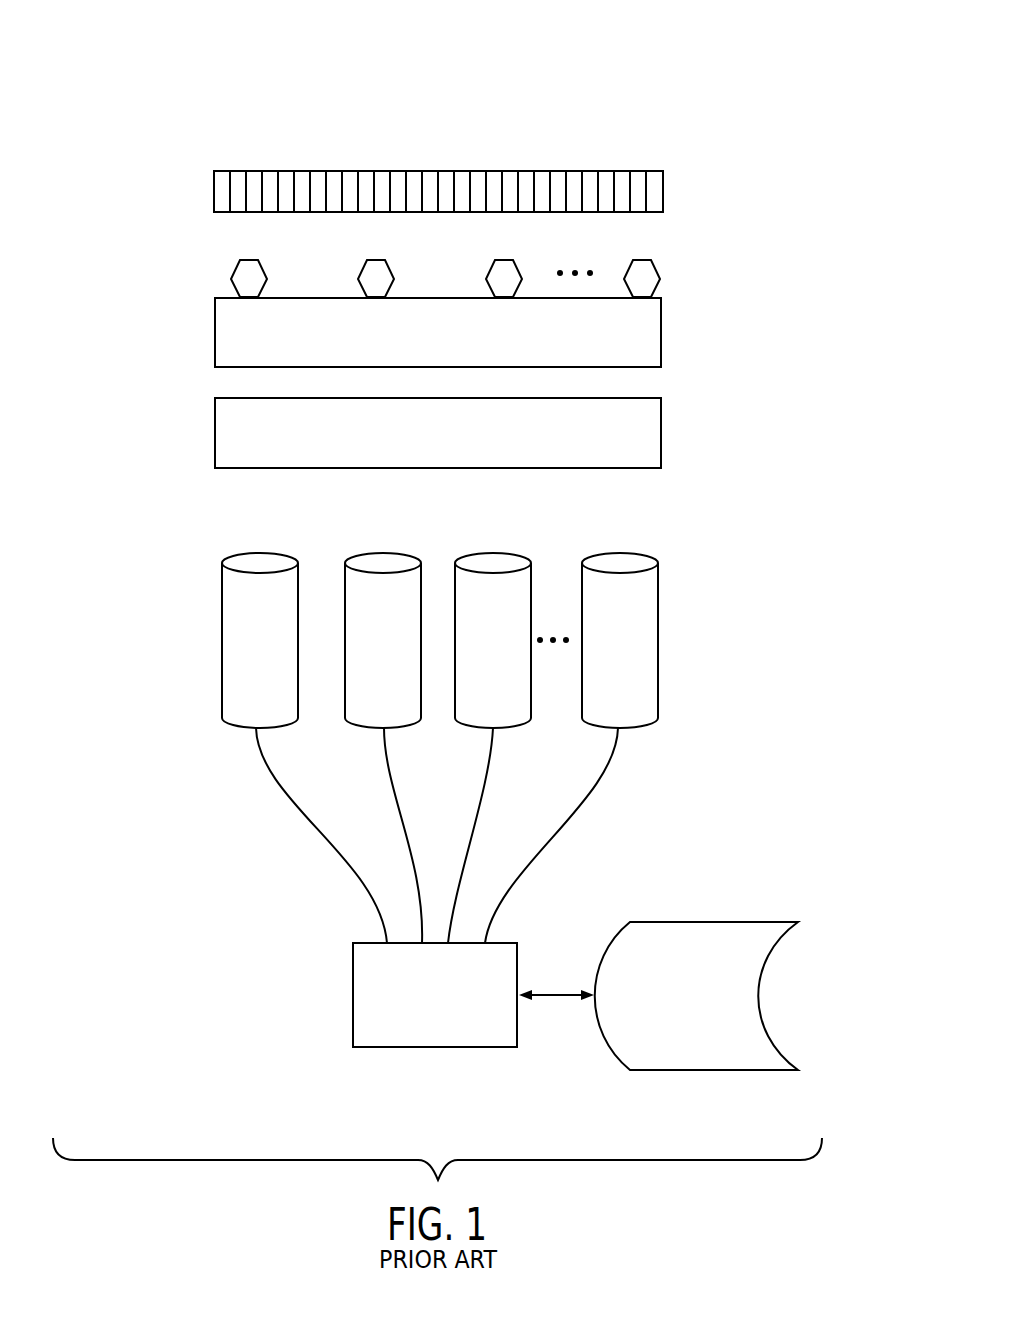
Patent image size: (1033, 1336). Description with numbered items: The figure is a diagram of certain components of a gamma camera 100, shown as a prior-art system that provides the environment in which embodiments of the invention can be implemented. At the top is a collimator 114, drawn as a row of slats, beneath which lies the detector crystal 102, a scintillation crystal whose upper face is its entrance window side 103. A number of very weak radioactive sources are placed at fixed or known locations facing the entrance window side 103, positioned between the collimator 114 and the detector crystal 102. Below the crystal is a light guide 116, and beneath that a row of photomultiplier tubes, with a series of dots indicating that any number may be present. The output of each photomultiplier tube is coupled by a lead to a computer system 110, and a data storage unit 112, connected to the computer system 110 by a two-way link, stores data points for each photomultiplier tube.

The gamma camera 100 is at (676, 72).
The collimator 114 is at (350, 170).
The detector crystal 102 is at (661, 333).
The entrance window side 103 is at (222, 295).
The light guide 116 is at (661, 425).
The computer system 110 is at (438, 1048).
The data storage unit 112 is at (690, 920).